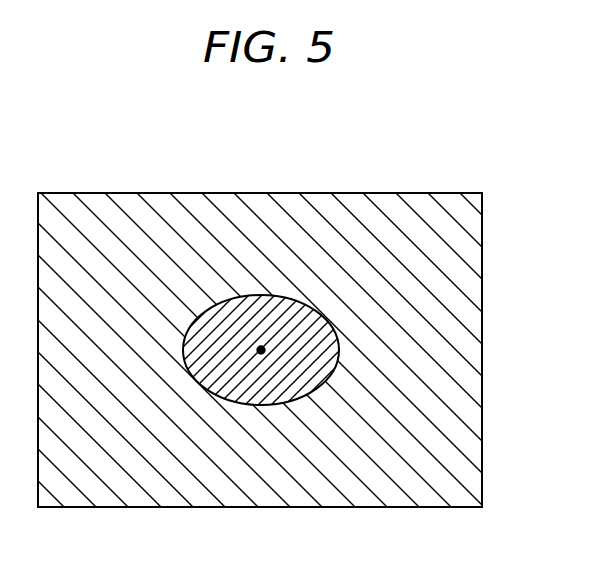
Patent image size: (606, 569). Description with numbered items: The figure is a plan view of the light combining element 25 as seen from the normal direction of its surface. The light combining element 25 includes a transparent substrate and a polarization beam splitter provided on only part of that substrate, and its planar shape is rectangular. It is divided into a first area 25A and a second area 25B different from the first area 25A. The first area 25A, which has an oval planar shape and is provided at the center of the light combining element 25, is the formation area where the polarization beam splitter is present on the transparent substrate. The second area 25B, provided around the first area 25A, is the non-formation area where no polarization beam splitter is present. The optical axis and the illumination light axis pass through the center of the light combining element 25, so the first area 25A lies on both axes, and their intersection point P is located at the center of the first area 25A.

The light combining element 25 is at (453, 185).
The first area 25A is at (327, 342).
The second area 25B is at (468, 248).
The intersection point P is at (261, 350).